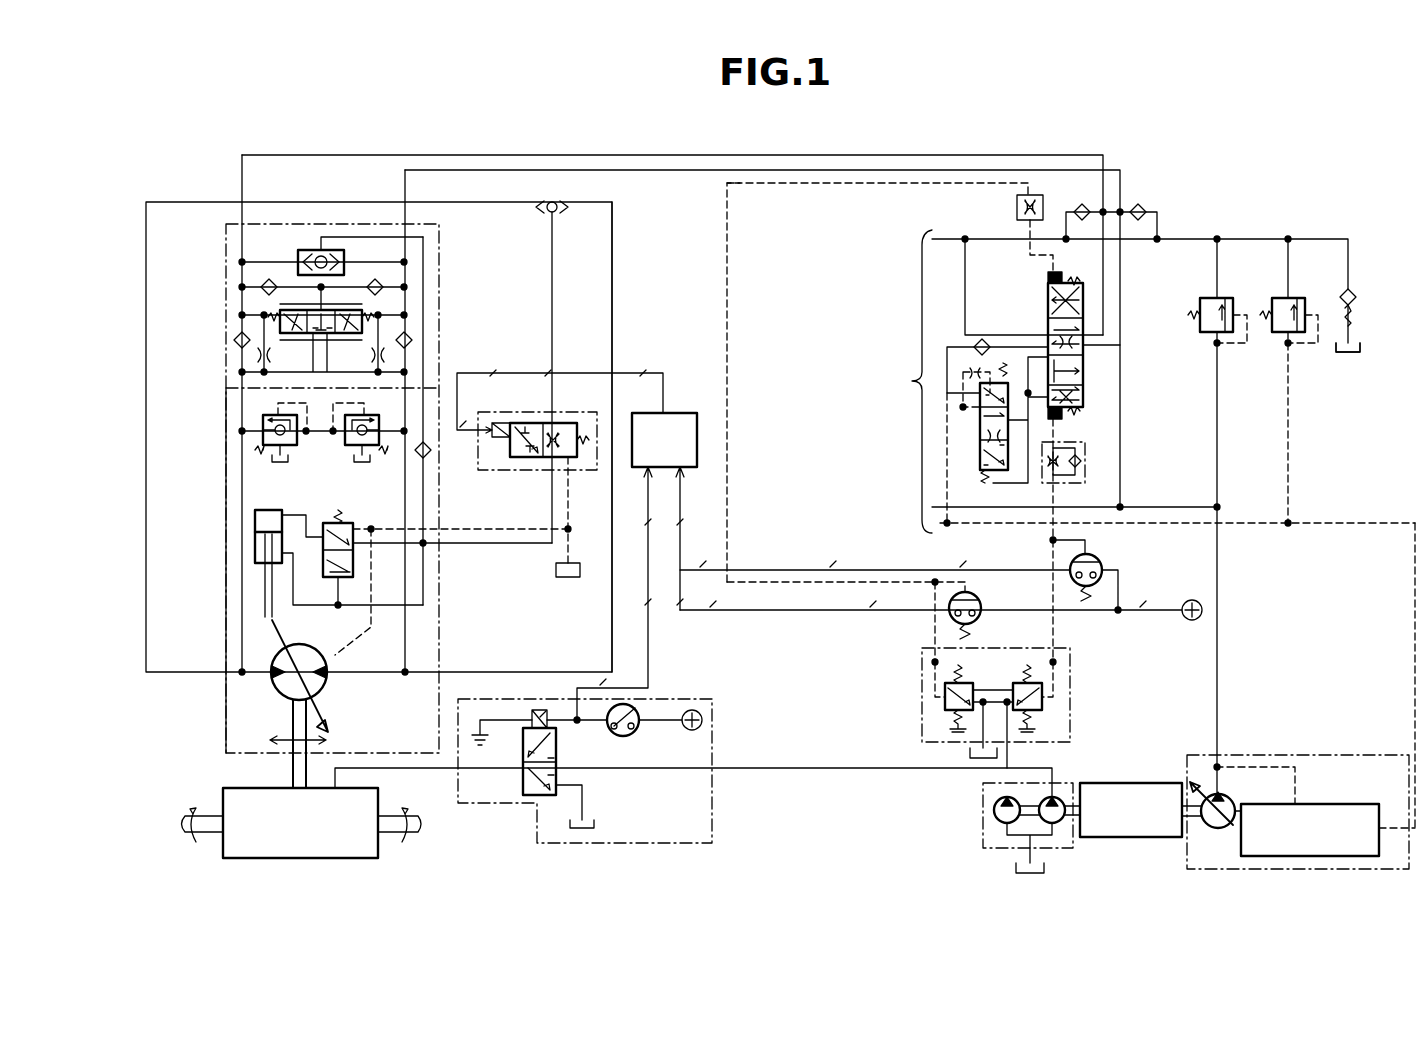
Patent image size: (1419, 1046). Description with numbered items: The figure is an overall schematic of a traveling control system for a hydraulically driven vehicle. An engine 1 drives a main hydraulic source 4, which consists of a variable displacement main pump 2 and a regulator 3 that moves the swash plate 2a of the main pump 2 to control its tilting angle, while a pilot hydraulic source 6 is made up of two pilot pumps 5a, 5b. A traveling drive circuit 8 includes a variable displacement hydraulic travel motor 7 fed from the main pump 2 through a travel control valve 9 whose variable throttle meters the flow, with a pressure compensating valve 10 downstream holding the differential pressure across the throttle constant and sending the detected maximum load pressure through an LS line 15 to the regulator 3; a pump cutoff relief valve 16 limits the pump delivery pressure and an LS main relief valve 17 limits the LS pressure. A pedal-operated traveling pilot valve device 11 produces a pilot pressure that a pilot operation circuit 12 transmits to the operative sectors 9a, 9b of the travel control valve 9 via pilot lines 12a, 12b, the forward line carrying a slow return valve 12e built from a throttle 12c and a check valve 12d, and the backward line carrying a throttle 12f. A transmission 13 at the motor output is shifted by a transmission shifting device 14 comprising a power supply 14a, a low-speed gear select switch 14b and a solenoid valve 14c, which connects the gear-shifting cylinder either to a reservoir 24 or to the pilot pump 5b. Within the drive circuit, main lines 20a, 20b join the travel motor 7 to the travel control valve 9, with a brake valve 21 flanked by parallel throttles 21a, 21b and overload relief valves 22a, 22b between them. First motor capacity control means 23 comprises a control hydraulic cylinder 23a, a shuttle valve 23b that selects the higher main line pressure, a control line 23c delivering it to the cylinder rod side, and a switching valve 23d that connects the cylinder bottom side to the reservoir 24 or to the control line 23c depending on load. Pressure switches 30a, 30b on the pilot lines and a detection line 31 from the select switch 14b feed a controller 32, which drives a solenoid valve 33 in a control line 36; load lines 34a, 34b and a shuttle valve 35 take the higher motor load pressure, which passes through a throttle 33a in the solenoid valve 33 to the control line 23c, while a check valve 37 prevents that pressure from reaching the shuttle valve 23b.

The engine 1 is at (1118, 783).
The variable displacement main pump 2 is at (1233, 805).
The swash plate 2a is at (1228, 826).
The regulator 3 is at (1350, 805).
The main hydraulic source 4 is at (1270, 755).
The pilot pump 5a is at (994, 812).
The pilot pump 5b is at (1052, 797).
The pilot hydraulic source 6 is at (983, 838).
The variable displacement hydraulic travel motor 7 is at (328, 681).
The traveling drive circuit 8 is at (226, 425).
The travel control valve 9 is at (1048, 325).
The operative sector 9a is at (1062, 415).
The operative sector 9b is at (1048, 278).
The pressure compensating valve 10 is at (980, 456).
The traveling pilot valve device 11 is at (1072, 721).
The pilot operation circuit 12 is at (721, 265).
The pilot line 12a is at (1053, 522).
The pilot line 12b is at (727, 206).
The throttle 12c is at (1048, 468).
The check valve 12d is at (1078, 466).
The slow return valve 12e is at (1085, 453).
The throttle 12f is at (1017, 211).
The transmission 13 is at (262, 790).
The transmission shifting device 14 is at (712, 836).
The power supply 14a is at (702, 720).
The low-speed gear select switch 14b is at (626, 737).
The solenoid valve 14c is at (557, 750).
The LS line 15 is at (1415, 620).
The pump cutoff relief valve 16 is at (1206, 298).
The LS main relief valve 17 is at (1278, 298).
The main line 20a is at (396, 626).
The main line 20b is at (226, 618).
The brake valve 21 is at (280, 318).
The throttle 21a is at (392, 357).
The throttle 21b is at (257, 355).
The overload relief valve 22a is at (345, 447).
The overload relief valve 22b is at (300, 447).
The first motor capacity control means 23 is at (436, 597).
The control hydraulic cylinder 23a is at (255, 545).
The shuttle valve 23b is at (304, 250).
The control line 23c is at (432, 567).
The switching valve 23d is at (338, 592).
The reservoir 24 is at (566, 578).
The pressure switch 30a is at (1102, 562).
The pressure switch 30b is at (980, 600).
The detection line 31 is at (650, 691).
The controller 32 is at (670, 413).
The solenoid valve 33 is at (545, 473).
The throttle 33a is at (561, 423).
The load line 34a is at (612, 640).
The load line 34b is at (172, 676).
The shuttle valve 35 is at (542, 211).
The control line 36 is at (552, 288).
The check valve 37 is at (432, 452).